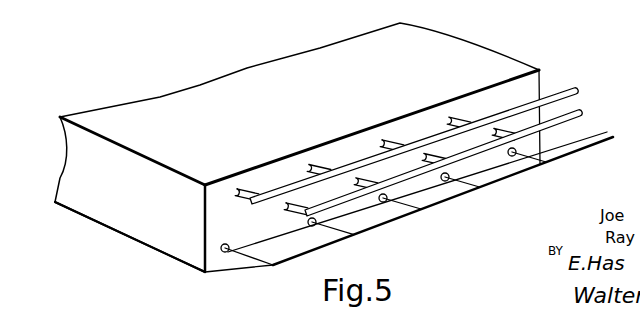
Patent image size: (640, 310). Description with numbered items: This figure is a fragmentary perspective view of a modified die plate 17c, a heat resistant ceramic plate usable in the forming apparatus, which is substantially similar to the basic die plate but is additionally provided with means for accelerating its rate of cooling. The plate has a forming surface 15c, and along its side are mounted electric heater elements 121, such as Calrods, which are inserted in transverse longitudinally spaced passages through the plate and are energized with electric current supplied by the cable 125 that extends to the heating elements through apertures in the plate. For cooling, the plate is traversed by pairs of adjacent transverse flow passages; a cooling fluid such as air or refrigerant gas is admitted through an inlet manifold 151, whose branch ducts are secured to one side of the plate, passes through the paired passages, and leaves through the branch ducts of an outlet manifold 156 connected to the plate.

The die plate 17c is at (98, 223).
The forming surface 15c is at (140, 248).
The cable 125 is at (625, 122).
The electric heater element 121 is at (221, 248).
The inlet manifold 151 is at (557, 92).
The outlet manifold 156 is at (566, 112).